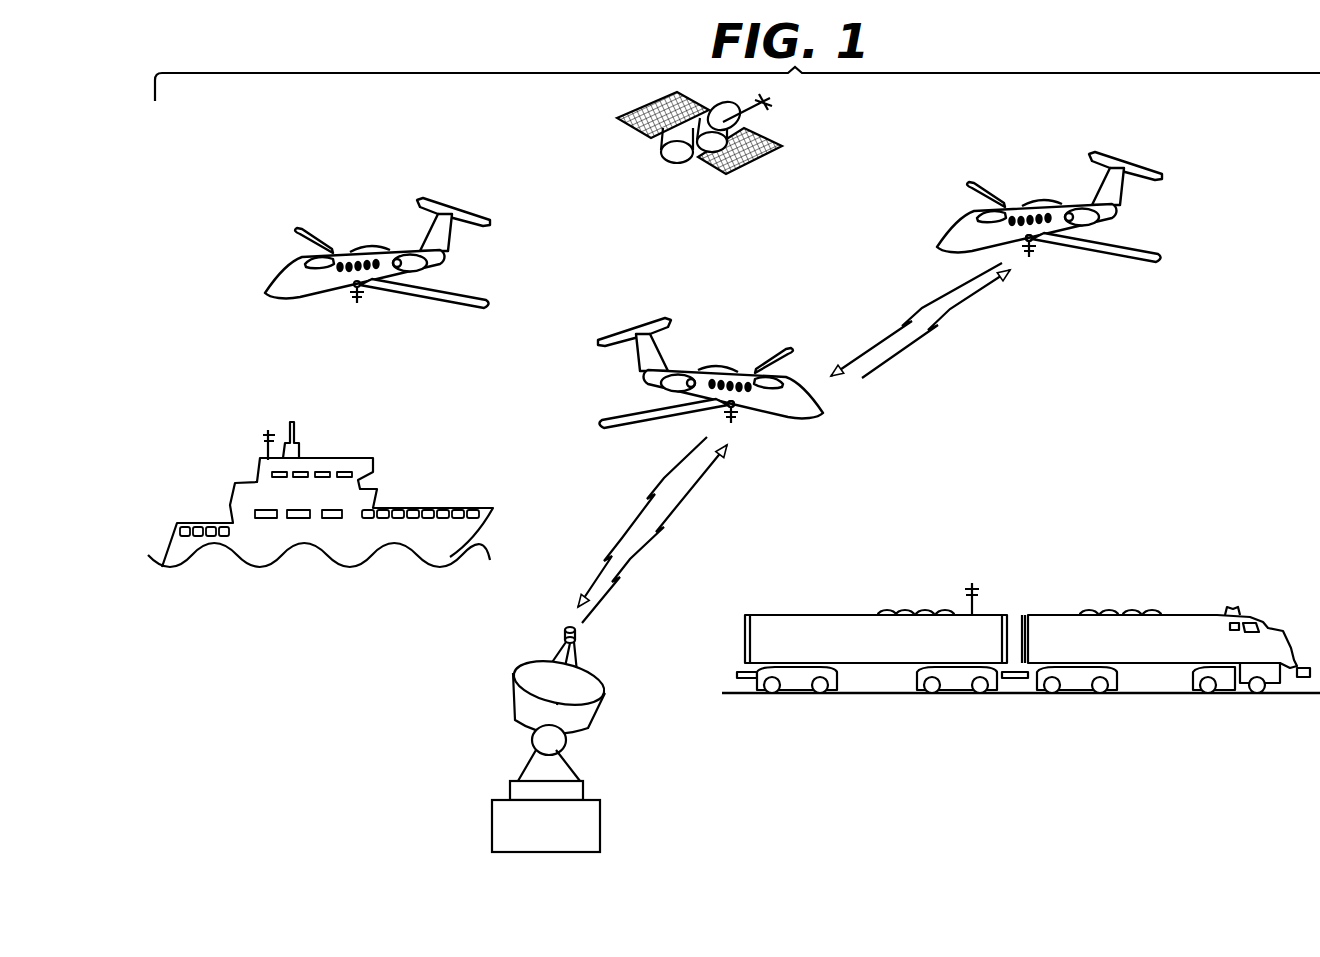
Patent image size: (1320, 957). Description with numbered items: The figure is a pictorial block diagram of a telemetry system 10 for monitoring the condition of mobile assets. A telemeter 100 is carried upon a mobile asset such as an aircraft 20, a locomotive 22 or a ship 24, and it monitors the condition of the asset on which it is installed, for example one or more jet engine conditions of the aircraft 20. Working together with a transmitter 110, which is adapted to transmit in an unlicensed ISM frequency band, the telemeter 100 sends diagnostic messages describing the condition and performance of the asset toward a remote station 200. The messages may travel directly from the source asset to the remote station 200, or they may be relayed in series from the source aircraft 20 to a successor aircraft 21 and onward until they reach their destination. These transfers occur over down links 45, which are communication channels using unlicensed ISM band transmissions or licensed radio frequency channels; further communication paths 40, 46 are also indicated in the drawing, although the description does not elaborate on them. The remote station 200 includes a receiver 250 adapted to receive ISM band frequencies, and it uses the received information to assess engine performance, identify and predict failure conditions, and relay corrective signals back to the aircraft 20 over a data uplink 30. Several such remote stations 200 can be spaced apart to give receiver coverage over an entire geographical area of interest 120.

The telemetry system 10 is at (1123, 473).
The aircraft 20 is at (353, 248).
The aircraft 21 is at (655, 366).
The locomotive 22 is at (1050, 632).
The ship 24 is at (380, 490).
The data uplink 30 is at (923, 337).
The communication link 40 is at (930, 306).
The down links 45 is at (593, 537).
The communication link 46 is at (1022, 343).
The telemeter 100 is at (742, 420).
The transmitter 110 is at (738, 425).
The geographical area of interest 120 is at (590, 688).
The remote station 200 is at (597, 739).
The receiver 250 is at (507, 828).